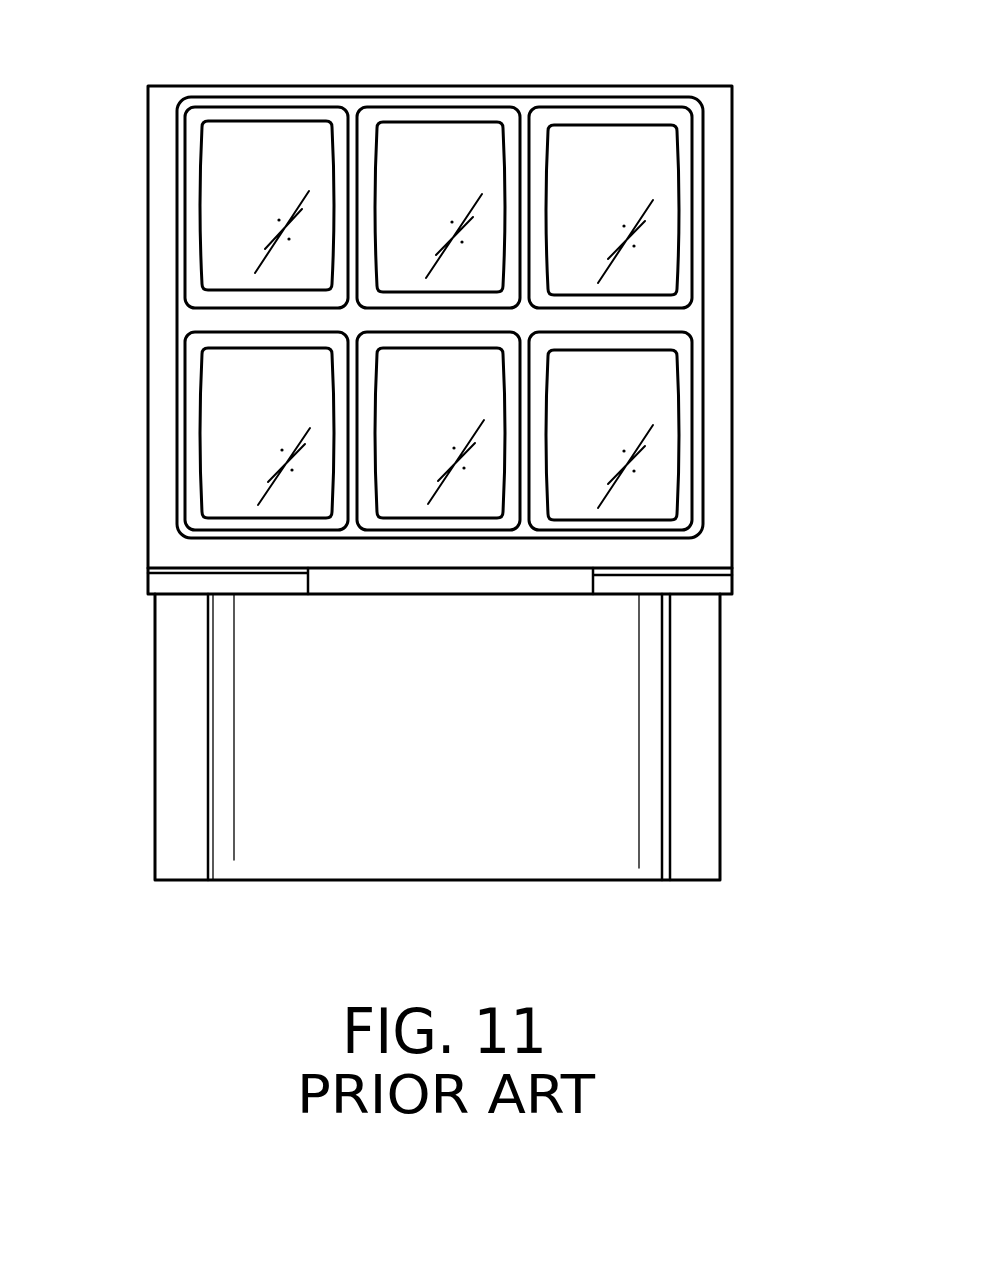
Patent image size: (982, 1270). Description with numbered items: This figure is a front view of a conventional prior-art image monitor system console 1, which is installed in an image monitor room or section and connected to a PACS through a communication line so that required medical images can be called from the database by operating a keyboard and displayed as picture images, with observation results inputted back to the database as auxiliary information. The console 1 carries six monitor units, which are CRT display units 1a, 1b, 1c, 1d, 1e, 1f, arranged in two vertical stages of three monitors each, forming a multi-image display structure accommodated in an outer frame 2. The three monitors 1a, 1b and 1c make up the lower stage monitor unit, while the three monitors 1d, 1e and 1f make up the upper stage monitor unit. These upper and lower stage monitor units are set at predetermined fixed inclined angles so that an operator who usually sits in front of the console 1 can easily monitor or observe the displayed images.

The image monitor system console 1 is at (758, 102).
The monitor unit 1a is at (235, 388).
The monitor unit 1b is at (410, 457).
The monitor unit 1c is at (648, 410).
The monitor unit 1d is at (237, 160).
The monitor unit 1e is at (403, 218).
The monitor unit 1f is at (655, 178).
The outer frame 2 is at (710, 548).